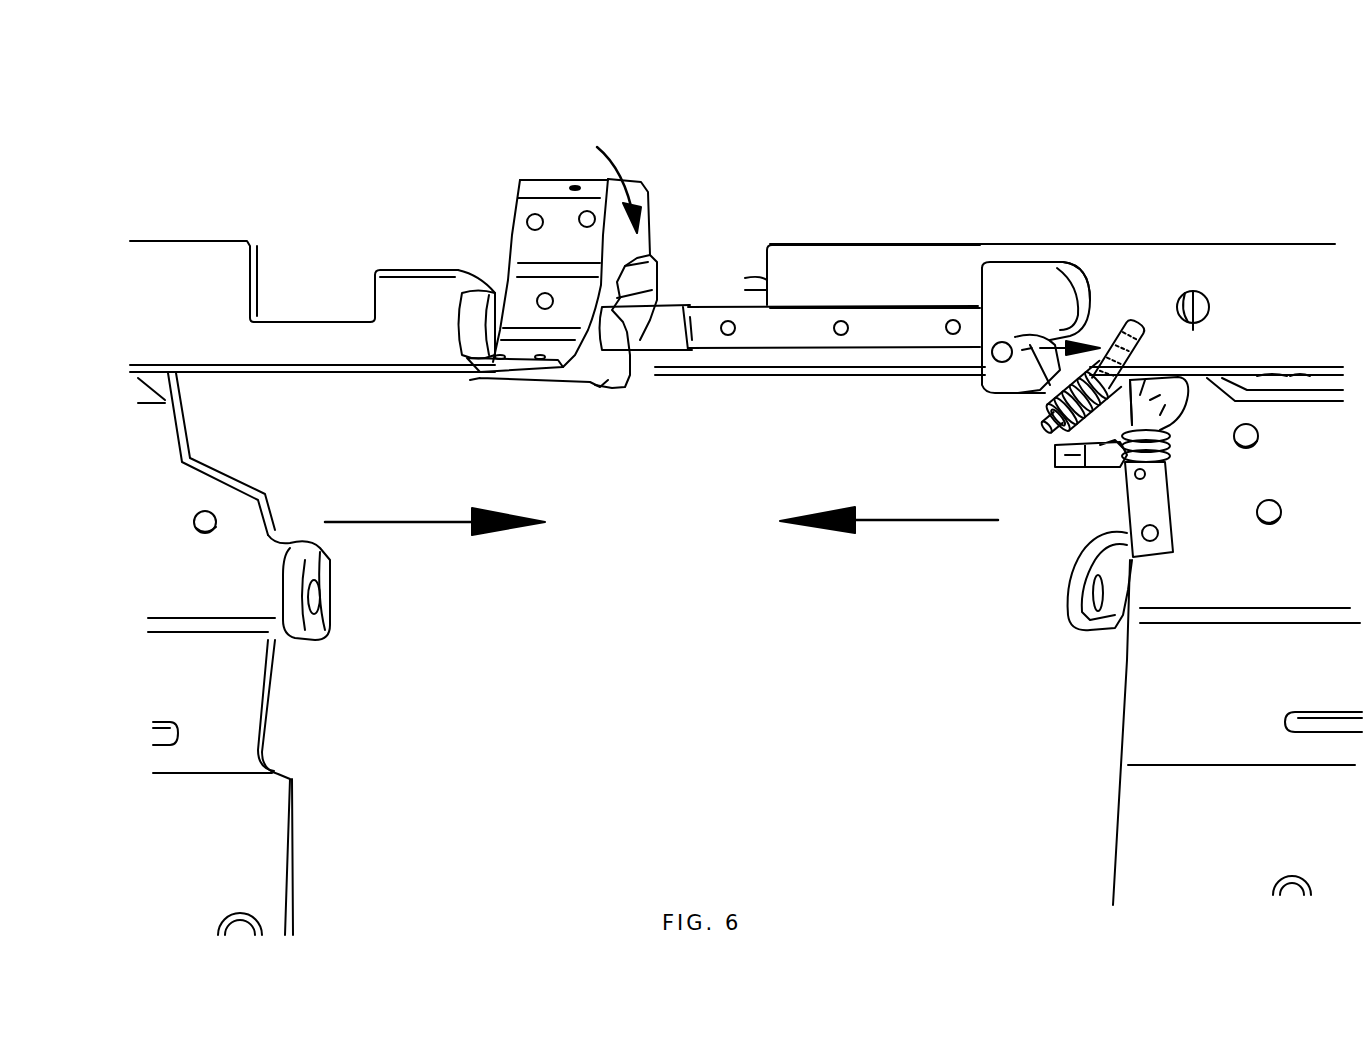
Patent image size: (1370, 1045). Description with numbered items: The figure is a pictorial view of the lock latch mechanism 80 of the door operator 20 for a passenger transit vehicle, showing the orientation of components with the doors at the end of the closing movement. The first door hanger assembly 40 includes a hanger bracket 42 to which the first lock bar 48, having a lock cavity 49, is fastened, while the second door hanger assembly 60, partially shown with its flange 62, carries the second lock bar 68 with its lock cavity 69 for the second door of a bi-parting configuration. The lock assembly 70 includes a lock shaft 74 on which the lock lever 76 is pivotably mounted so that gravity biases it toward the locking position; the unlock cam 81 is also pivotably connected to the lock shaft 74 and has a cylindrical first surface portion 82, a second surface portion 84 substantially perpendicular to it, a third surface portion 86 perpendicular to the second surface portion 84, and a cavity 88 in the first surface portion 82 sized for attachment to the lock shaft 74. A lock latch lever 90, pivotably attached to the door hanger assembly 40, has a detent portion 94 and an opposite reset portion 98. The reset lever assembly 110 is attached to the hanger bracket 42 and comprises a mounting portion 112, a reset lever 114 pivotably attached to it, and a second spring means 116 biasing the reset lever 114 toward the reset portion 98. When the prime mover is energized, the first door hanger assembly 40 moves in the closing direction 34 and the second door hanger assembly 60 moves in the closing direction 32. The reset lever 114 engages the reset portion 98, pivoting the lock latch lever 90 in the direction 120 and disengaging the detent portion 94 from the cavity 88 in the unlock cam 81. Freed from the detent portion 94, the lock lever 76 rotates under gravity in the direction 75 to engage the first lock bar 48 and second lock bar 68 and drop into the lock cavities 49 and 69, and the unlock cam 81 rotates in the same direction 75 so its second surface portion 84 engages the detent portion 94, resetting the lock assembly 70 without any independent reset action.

The door operator 20 is at (815, 97).
The closing direction 32 is at (427, 524).
The closing direction 34 is at (905, 522).
The door hanger assembly 40 is at (1080, 772).
The hanger bracket 42 is at (1128, 685).
The first lock bar 48 is at (868, 243).
The lock cavity 49 is at (765, 290).
The second door hanger assembly 60 is at (312, 776).
The panel flange 62 is at (263, 690).
The second lock bar 68 is at (207, 241).
The lock cavity 69 is at (318, 320).
The lock assembly 70 is at (1190, 165).
The lock shaft 74 is at (767, 330).
The direction 75 is at (632, 162).
The lock lever 76 is at (553, 180).
The lock latch mechanism 80 is at (1200, 243).
The unlock cam 81 is at (1050, 185).
The first surface portion 82 is at (1013, 270).
The second surface portion 84 is at (1075, 270).
The third surface portion 86 is at (1020, 395).
The cavity 88 is at (1080, 320).
The lock latch lever 90 is at (1226, 323).
The detent portion 94 is at (1132, 364).
The reset portion 98 is at (1043, 438).
The reset lever assembly 110 is at (1053, 527).
The mounting portion 112 is at (1173, 525).
The reset lever 114 is at (1100, 470).
The second spring means 116 is at (1167, 442).
The direction 120 is at (1096, 335).